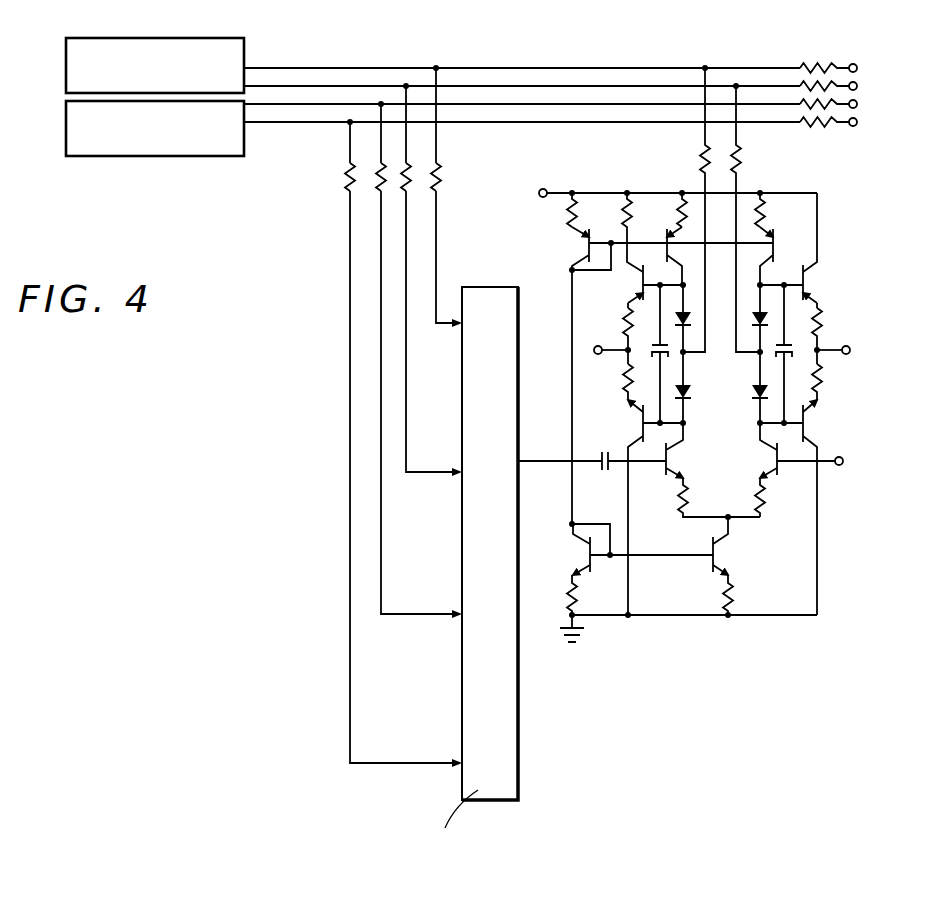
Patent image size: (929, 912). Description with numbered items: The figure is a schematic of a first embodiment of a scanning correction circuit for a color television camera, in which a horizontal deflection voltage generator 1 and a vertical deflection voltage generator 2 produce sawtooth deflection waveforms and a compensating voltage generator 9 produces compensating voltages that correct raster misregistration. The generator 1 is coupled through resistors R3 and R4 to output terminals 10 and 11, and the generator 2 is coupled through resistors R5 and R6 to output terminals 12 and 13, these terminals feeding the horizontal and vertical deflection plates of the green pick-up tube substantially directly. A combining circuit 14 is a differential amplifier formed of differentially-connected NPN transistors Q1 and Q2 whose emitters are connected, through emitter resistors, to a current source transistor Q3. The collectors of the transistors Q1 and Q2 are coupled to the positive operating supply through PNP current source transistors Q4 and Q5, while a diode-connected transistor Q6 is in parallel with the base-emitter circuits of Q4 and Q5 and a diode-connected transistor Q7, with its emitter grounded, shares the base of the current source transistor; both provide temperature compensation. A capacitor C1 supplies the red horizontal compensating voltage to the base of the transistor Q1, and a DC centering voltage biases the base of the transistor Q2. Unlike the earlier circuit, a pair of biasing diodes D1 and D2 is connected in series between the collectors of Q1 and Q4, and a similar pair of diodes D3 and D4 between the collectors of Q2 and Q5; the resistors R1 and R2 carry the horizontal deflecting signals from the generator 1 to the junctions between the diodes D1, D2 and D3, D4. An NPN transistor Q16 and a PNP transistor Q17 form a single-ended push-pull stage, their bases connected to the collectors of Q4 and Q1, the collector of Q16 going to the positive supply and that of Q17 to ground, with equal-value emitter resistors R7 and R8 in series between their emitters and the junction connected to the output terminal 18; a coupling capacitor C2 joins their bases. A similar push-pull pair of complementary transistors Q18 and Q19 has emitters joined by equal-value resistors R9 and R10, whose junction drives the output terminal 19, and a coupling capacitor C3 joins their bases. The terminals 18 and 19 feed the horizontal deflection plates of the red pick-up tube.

The horizontal deflection voltage generator 1 is at (66, 66).
The vertical deflection voltage generator 2 is at (66, 127).
The compensating voltage generator 9 is at (503, 297).
The output terminal 10 is at (857, 68).
The output terminal 11 is at (857, 88).
The output terminal 12 is at (857, 106).
The output terminal 13 is at (857, 124).
The combining circuit 14 is at (802, 187).
The output terminal 18 is at (602, 345).
The output terminal 19 is at (849, 355).
The resistor R1 is at (700, 163).
The resistor R2 is at (741, 158).
The resistor R3 is at (806, 63).
The resistor R4 is at (803, 84).
The resistor R5 is at (803, 101).
The resistor R6 is at (803, 119).
The emitter resistor R7 is at (625, 322).
The emitter resistor R8 is at (625, 381).
The emitter resistor R9 is at (822, 327).
The emitter resistor R10 is at (822, 380).
The differentially-connected transistor Q1 is at (690, 456).
The differentially-connected transistor Q2 is at (771, 478).
The current source transistor Q3 is at (708, 571).
The current source transistor Q4 is at (665, 239).
The current source transistor Q5 is at (778, 239).
The diode-connected transistor Q6 is at (590, 231).
The diode-connected transistor Q7 is at (592, 576).
The NPN transistor Q16 is at (650, 250).
The PNP transistor Q17 is at (640, 420).
The complementary transistor Q18 is at (812, 280).
The complementary transistor Q19 is at (812, 420).
The capacitor C1 is at (609, 471).
The coupling capacitor C2 is at (654, 348).
The coupling capacitor C3 is at (797, 351).
The biasing diode D1 is at (700, 312).
The biasing diode D2 is at (690, 394).
The biasing diode D3 is at (756, 318).
The biasing diode D4 is at (753, 394).